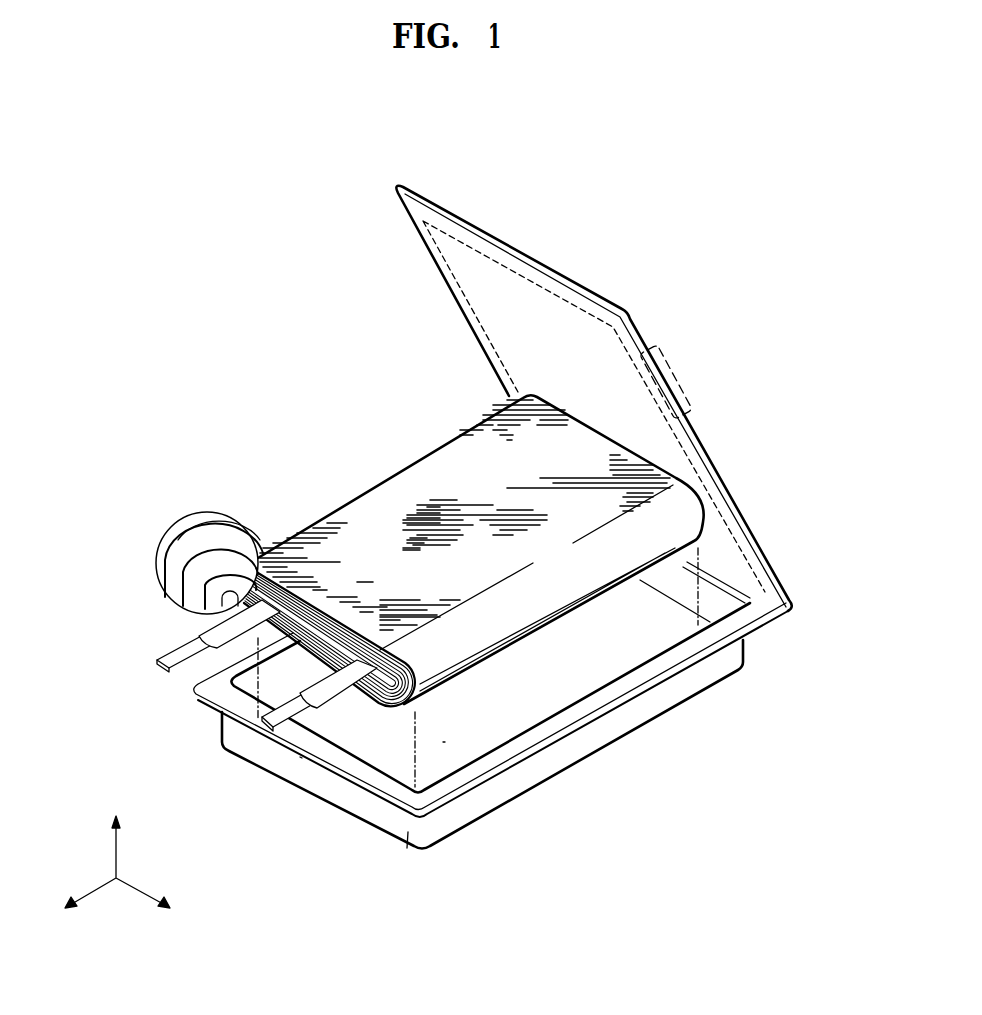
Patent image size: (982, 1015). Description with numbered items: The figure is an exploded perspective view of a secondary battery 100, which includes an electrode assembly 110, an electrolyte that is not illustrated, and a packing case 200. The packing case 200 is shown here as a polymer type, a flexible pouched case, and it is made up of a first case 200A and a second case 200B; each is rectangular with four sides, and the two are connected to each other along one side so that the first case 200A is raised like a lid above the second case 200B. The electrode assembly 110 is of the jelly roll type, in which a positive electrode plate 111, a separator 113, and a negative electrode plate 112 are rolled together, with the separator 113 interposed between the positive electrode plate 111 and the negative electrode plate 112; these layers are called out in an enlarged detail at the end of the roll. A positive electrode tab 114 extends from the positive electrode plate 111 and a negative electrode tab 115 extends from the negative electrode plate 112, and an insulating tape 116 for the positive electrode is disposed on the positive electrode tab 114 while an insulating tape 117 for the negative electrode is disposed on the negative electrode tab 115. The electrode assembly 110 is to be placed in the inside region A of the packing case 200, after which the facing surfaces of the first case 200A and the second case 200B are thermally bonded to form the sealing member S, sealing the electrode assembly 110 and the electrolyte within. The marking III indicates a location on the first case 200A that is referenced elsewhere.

The secondary battery 100 is at (203, 198).
The electrode assembly 110 is at (92, 515).
The positive electrode plate 111 is at (183, 537).
The negative electrode plate 112 is at (212, 602).
The separator 113 is at (193, 577).
The positive electrode tab 114 is at (173, 656).
The negative electrode tab 115 is at (262, 718).
The insulating tape for a positive electrode 116 is at (212, 628).
The insulating tape for a negative electrode 117 is at (337, 690).
The packing case 200 is at (814, 273).
The first case 200A is at (570, 284).
The second case 200B is at (640, 713).
The sealing member S is at (335, 763).
The inside region A is at (443, 742).
The section line III is at (679, 380).